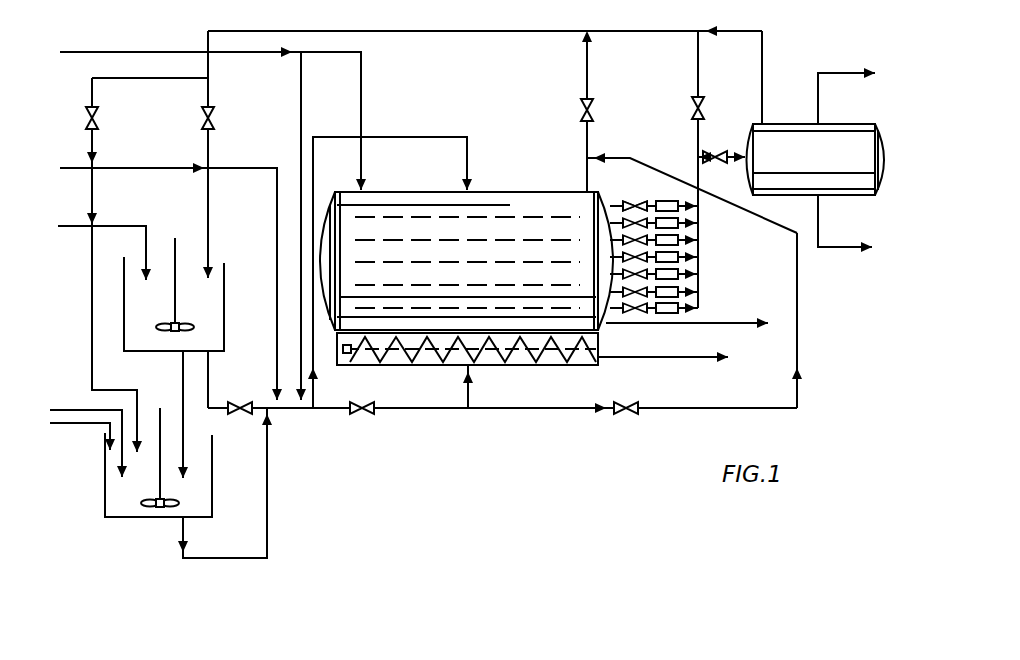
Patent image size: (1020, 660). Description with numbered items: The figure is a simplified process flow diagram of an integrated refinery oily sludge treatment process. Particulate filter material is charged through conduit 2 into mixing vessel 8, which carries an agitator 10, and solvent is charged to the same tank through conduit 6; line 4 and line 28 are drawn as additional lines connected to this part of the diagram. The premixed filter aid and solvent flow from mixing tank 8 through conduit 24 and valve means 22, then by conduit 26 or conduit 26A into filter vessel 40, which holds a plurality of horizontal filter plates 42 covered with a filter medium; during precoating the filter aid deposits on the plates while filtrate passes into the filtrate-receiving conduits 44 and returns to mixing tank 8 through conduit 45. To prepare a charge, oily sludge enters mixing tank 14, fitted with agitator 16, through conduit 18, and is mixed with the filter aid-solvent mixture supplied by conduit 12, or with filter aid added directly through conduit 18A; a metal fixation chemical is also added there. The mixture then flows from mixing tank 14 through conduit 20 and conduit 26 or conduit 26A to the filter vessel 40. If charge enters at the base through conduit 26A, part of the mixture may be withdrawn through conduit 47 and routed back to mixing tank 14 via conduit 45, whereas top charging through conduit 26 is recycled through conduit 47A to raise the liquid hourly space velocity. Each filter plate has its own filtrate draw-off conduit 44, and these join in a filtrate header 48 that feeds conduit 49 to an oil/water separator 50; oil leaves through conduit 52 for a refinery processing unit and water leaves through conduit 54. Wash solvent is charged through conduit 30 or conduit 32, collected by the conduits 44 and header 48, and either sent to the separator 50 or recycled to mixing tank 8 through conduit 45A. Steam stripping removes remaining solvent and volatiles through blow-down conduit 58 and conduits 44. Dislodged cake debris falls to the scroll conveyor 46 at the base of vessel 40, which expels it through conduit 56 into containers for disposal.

The conduit 2 is at (125, 226).
The feed line 4 is at (158, 167).
The conduit 6 is at (210, 208).
The mixing vessel 8 is at (225, 306).
The agitator 10 is at (176, 306).
The conduit 12 is at (184, 450).
The mixing tank 14 is at (105, 506).
The agitator 16 is at (164, 412).
The conduit 18 is at (70, 410).
The conduit 18A is at (63, 424).
The conduit 20 is at (230, 560).
The valve means 22 is at (502, 396).
The conduit 24 is at (210, 372).
The conduit 26 is at (425, 137).
The conduit 26A is at (435, 412).
The line 28 is at (256, 55).
The conduit 30 is at (302, 116).
The conduit 32 is at (362, 106).
The filter vessel 40 is at (490, 192).
The filter plates 42 is at (521, 210).
The filtrate draw-off conduit 44 is at (667, 200).
The conduit 45 is at (148, 76).
The conduit 45A is at (764, 50).
The scroll conveyor 46 is at (578, 366).
The conduit 47 is at (590, 68).
The conduit 47A is at (800, 352).
The filtrate header 48 is at (700, 265).
The conduit 49 is at (719, 150).
The oil/water separator 50 is at (785, 124).
The conduit 52 is at (850, 73).
The conduit 54 is at (850, 249).
The conduit 56 is at (704, 358).
The blow-down conduit 58 is at (748, 326).